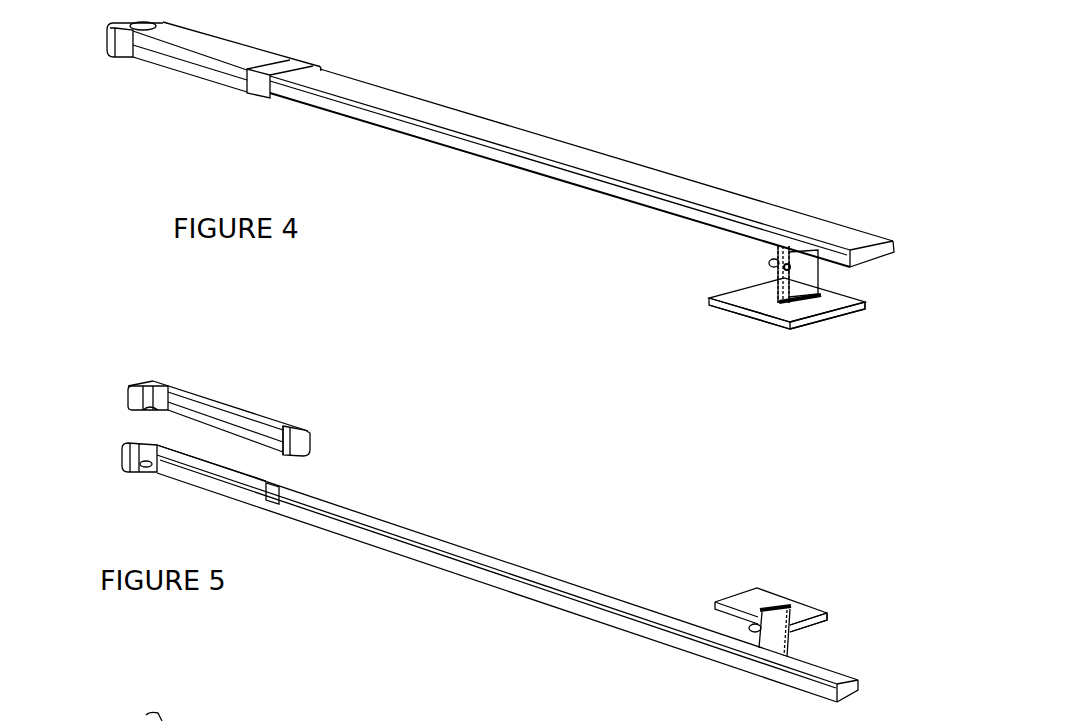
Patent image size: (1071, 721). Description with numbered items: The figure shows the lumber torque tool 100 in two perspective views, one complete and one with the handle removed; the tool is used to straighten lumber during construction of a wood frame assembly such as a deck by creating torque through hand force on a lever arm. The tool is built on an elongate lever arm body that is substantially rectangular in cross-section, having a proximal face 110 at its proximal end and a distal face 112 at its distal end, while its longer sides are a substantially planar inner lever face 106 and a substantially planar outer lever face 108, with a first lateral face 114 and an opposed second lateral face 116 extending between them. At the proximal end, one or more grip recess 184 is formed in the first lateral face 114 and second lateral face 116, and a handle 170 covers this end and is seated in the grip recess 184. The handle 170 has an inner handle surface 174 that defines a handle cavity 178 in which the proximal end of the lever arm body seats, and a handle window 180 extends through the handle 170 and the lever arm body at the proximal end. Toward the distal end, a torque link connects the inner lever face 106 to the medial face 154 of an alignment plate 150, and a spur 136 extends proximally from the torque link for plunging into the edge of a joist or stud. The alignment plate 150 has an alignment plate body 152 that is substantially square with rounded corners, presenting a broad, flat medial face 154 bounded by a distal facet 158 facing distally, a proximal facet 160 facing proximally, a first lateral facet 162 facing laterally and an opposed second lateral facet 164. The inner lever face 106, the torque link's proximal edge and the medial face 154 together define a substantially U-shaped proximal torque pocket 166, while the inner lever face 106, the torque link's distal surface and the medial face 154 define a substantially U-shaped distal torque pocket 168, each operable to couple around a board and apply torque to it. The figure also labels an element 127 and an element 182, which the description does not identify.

In FIG. 4, the lumber torque tool 100 is at (752, 107).
In FIG. 4, the inner lever face 106 is at (610, 193).
In FIG. 4, the outer lever face 108 is at (567, 150).
In FIG. 5, the proximal face 110 is at (123, 448).
In FIG. 4, the distal face 112 is at (880, 250).
In FIG. 4, the first lateral face 114 is at (537, 165).
In FIG. 5, the second lateral face 116 is at (470, 555).
In FIG. 5, the threaded post 127 is at (775, 638).
In FIG. 5, the spur 136 is at (738, 627).
In FIG. 4, the alignment plate 150 is at (727, 328).
In FIG. 4, the alignment plate body 152 is at (760, 326).
In FIG. 4, the medial face 154 is at (741, 292).
In FIG. 4, the distal facet 158 is at (815, 312).
In FIG. 5, the proximal facet 160 is at (730, 592).
In FIG. 4, the first lateral facet 162 is at (724, 305).
In FIG. 5, the second lateral facet 164 is at (785, 597).
In FIG. 4, the proximal torque pocket 166 is at (736, 256).
In FIG. 4, the distal torque pocket 168 is at (858, 279).
In FIG. 4, the handle 170 is at (183, 82).
In FIG. 5, the handle 170 is at (235, 390).
In FIG. 5, the inner handle surface 174 is at (316, 448).
In FIG. 5, the handle cavity 178 is at (364, 426).
In FIG. 4, the handle window 180 is at (139, 16).
In FIG. 4, the adhesive 182 is at (795, 300).
In FIG. 5, the adhesive 182 is at (790, 608).
In FIG. 5, the grip recess 184 is at (238, 502).